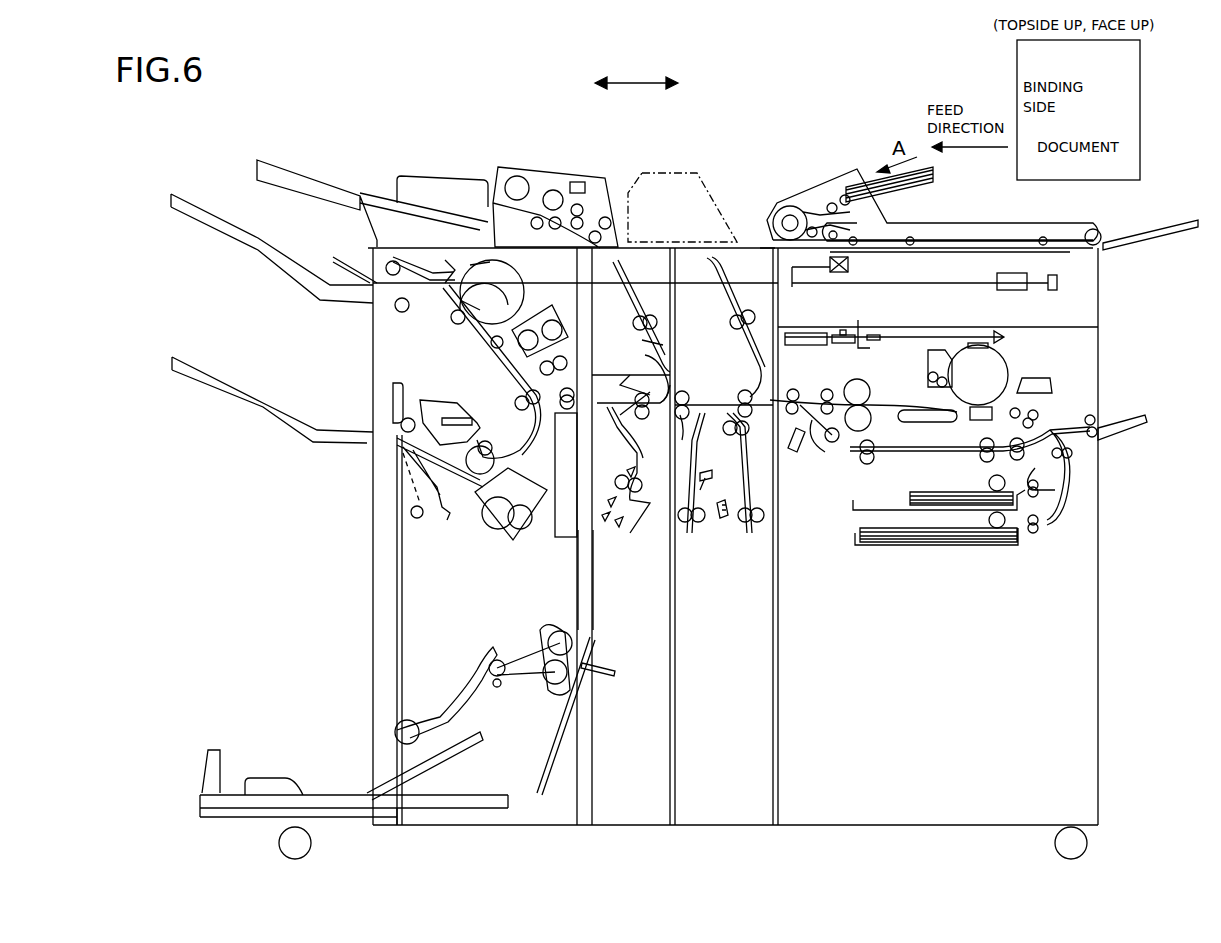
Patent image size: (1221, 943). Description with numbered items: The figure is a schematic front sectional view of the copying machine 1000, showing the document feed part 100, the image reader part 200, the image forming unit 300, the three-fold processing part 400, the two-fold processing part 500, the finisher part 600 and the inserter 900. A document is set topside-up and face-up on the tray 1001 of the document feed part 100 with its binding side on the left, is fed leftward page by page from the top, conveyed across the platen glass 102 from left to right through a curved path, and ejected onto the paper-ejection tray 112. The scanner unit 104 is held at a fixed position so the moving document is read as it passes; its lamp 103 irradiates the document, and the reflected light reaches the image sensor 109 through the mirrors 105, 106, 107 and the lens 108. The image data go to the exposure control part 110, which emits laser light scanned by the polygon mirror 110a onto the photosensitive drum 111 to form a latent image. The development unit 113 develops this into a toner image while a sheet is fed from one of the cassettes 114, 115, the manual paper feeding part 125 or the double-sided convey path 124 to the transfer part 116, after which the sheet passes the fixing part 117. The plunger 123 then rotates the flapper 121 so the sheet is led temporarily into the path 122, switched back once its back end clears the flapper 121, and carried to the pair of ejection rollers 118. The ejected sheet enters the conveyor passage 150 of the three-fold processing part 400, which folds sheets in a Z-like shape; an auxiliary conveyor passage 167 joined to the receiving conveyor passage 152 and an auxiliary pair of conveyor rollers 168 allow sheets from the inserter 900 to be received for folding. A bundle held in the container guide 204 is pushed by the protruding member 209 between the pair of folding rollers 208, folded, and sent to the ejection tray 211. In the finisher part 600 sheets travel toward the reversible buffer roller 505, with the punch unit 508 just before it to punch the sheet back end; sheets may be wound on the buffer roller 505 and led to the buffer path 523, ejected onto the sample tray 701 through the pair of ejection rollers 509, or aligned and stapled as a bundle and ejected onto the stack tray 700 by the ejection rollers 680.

The document feed part 100 is at (837, 170).
The platen glass 102 is at (1078, 252).
The lamp 103 is at (850, 265).
The scanner unit 104 is at (848, 275).
The mirror 105 is at (842, 277).
The mirror 106 is at (778, 268).
The mirror 107 is at (793, 283).
The lens 108 is at (998, 273).
The image sensor 109 is at (1060, 292).
The exposure control part 110 is at (862, 322).
The polygon mirror 110a is at (858, 350).
The photosensitive drum 111 is at (1010, 352).
The paper-ejection tray 112 is at (1180, 220).
The development unit 113 is at (1052, 393).
The cassette 114 is at (852, 500).
The cassette 115 is at (853, 533).
The transfer part 116 is at (978, 422).
The fixing part 117 is at (872, 390).
The pair of ejection rollers 118 is at (795, 388).
The flapper 121 is at (810, 393).
The path 122 is at (812, 440).
The plunger 123 is at (795, 452).
The double-sided convey path 124 is at (913, 453).
The manual paper feeding part 125 is at (1140, 432).
The conveyor passage 150 is at (708, 397).
The receiving conveyor passage 152 is at (740, 462).
The auxiliary conveyor passage 167 is at (747, 358).
The auxiliary pair of conveyor rollers 168 is at (730, 307).
The image reader part 200 is at (1103, 309).
The container guide 204 is at (560, 773).
The pair of folding rollers 208 is at (547, 628).
The protruding member 209 is at (630, 655).
The ejection tray 211 is at (232, 780).
The image forming unit 300 is at (1105, 369).
The three-fold processing part 400 is at (748, 242).
The two-fold processing part 500 is at (660, 243).
The buffer roller 505 is at (500, 262).
The punch unit 508 is at (562, 307).
The pair of ejection rollers 509 is at (403, 252).
The buffer path 523 is at (402, 313).
The finisher part 600 is at (436, 238).
The ejection rollers 680 is at (410, 413).
The stack tray 700 is at (196, 360).
The sample tray 701 is at (192, 200).
The inserter 900 is at (523, 163).
The copying machine 1000 is at (748, 146).
The tray 1001 is at (937, 182).